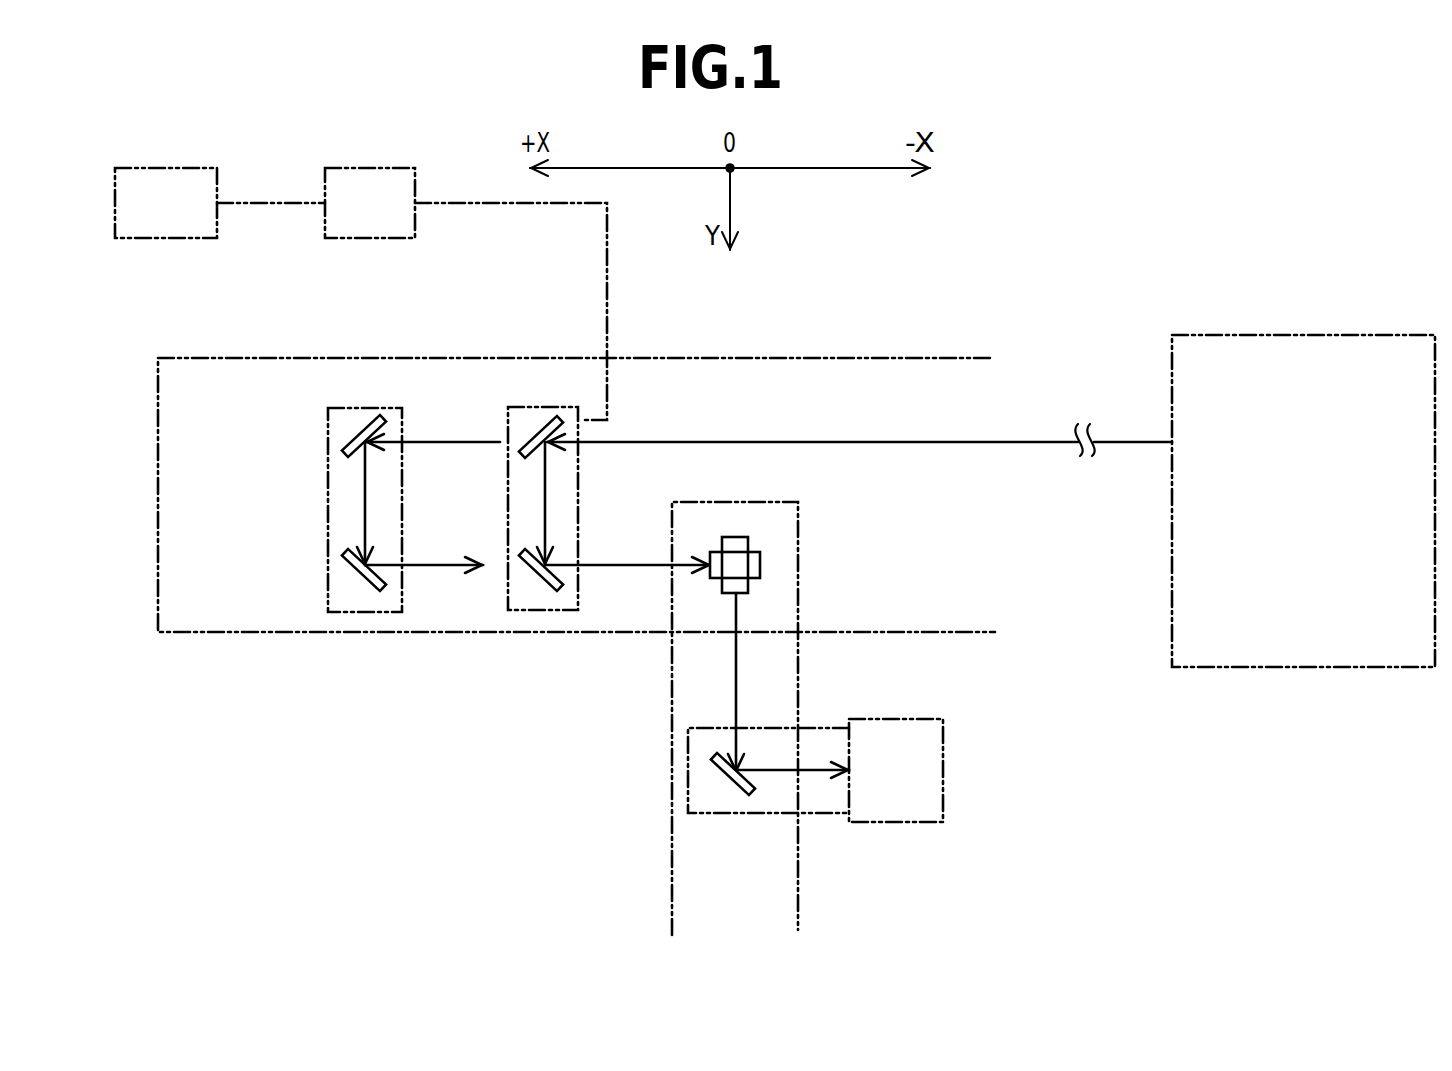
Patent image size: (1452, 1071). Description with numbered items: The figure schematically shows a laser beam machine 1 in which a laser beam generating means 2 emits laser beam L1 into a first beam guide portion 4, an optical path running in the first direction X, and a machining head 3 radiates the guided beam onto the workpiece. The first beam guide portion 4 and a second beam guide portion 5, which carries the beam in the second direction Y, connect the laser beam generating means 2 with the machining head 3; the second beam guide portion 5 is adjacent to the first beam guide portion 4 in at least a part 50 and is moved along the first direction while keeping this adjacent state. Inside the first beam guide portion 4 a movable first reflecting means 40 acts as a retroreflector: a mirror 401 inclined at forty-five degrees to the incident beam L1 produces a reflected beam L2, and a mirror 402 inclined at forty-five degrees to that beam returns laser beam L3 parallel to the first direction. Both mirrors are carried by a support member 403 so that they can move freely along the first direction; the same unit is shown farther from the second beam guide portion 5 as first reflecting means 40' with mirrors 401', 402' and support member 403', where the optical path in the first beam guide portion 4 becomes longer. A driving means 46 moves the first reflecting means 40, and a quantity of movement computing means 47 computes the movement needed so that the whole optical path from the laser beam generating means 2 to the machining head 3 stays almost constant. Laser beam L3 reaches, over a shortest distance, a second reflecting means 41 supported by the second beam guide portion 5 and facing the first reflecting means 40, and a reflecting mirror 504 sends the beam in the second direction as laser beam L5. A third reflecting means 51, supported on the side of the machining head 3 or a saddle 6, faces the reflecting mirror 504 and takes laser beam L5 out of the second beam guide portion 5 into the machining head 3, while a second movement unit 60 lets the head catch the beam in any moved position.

The laser beam machine 1 is at (1095, 228).
The laser beam generating means 2 is at (1375, 332).
The machining head 3 is at (943, 790).
The first beam guide portion 4 is at (825, 356).
The second beam guide portion 5 is at (671, 738).
The saddle 6 is at (688, 762).
The first reflecting means 40 is at (550, 456).
The second beam shifting unit 40' is at (377, 457).
The second reflecting means 41 is at (725, 594).
The driving means 46 is at (367, 168).
The quantity of movement computing means 47 is at (148, 168).
The adjacent part of second beam guide portion 50 is at (798, 502).
The third reflecting means 51 is at (733, 782).
The second movement unit 60 is at (722, 814).
The mirror 401 is at (535, 367).
The mirror 401' is at (357, 365).
The mirror 402 is at (541, 633).
The mirror 402' is at (363, 633).
The support member 403 is at (485, 376).
The mirror holder of second unit 403' is at (308, 373).
The reflecting mirror 504 is at (712, 580).
The laser beam L1 is at (1028, 441).
The reflected beam L2 is at (545, 486).
The laser beam L3 is at (627, 564).
The laser beam L5 is at (737, 705).